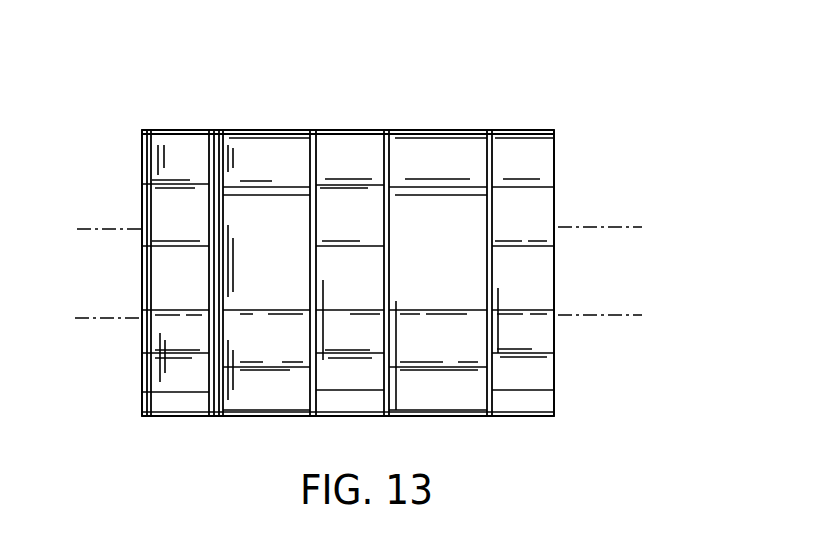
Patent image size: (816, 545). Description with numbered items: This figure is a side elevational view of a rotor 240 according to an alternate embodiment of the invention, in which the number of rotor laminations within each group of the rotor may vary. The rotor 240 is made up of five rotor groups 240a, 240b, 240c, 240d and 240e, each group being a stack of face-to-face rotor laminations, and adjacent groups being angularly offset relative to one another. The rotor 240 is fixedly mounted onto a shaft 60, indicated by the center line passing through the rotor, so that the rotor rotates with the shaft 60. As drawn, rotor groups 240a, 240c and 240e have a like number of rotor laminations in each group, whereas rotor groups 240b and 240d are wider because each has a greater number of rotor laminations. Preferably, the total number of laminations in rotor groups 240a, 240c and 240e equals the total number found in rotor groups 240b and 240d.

The rotor 240 is at (578, 124).
The rotor group 240a is at (175, 130).
The rotor group 240b is at (267, 130).
The rotor group 240c is at (348, 130).
The rotor group 240d is at (435, 130).
The rotor group 240e is at (523, 129).
The shaft 60 is at (90, 228).